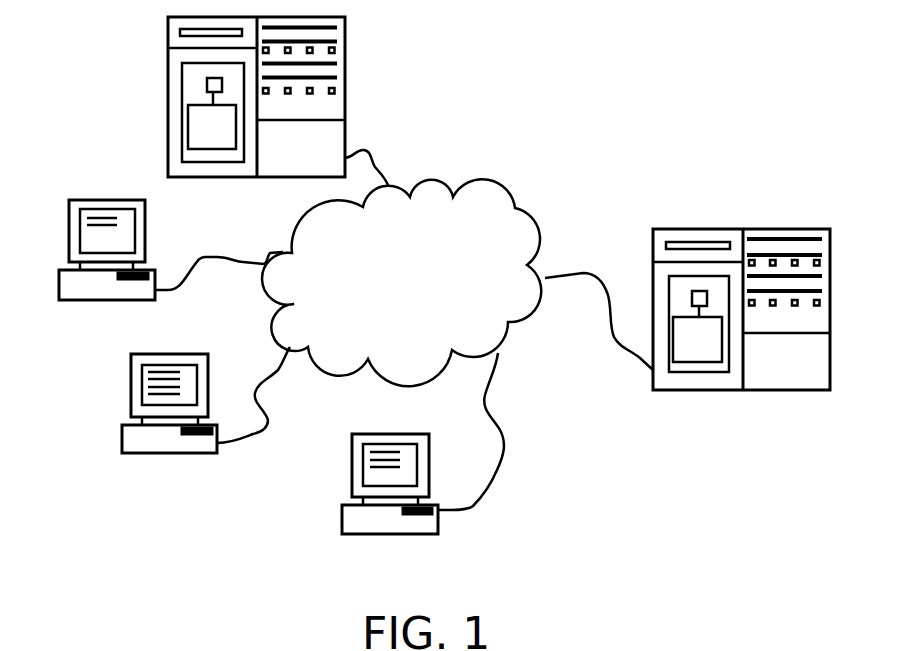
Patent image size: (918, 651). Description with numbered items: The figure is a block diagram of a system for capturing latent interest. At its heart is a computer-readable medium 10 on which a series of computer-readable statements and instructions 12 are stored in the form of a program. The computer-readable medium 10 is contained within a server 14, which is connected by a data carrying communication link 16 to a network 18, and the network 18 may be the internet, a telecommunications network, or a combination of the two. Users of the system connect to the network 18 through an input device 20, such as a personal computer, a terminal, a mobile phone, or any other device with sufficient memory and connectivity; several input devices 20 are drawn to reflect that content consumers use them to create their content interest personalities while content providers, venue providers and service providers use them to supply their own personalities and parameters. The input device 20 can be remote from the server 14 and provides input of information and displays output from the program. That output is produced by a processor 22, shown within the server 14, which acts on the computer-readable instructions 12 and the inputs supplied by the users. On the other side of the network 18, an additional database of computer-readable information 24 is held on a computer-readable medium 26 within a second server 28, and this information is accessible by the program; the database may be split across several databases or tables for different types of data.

The computer-readable medium 10 is at (202, 150).
The computer-readable statements and instructions 12 is at (203, 128).
The server 14 is at (187, 100).
The data carrying communication link 16 is at (372, 155).
The network 18 is at (513, 193).
The input device 20 is at (167, 455).
The processor 22 is at (207, 80).
The database of computer-readable information 24 is at (686, 345).
The computer-readable medium 26 is at (710, 362).
The server 28 is at (726, 363).